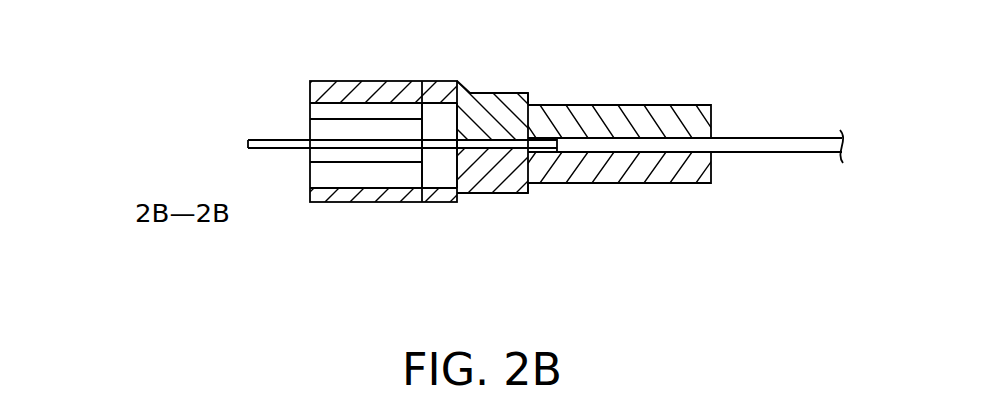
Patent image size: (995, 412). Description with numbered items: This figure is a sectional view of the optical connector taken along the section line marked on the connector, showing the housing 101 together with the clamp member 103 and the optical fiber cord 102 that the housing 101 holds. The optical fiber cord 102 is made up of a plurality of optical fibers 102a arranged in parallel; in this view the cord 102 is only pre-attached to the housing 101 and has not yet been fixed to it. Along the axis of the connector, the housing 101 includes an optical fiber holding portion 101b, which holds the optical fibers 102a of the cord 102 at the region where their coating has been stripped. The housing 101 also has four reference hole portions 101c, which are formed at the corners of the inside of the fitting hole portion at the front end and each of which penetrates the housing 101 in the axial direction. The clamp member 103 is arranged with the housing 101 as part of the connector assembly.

The housing 101 is at (504, 137).
The optical fiber holding portion 101b is at (491, 153).
The reference hole portion 101c is at (424, 105).
The optical fiber cord 102 is at (766, 143).
The optical fiber 102a is at (268, 140).
The clamp member 103 is at (500, 105).